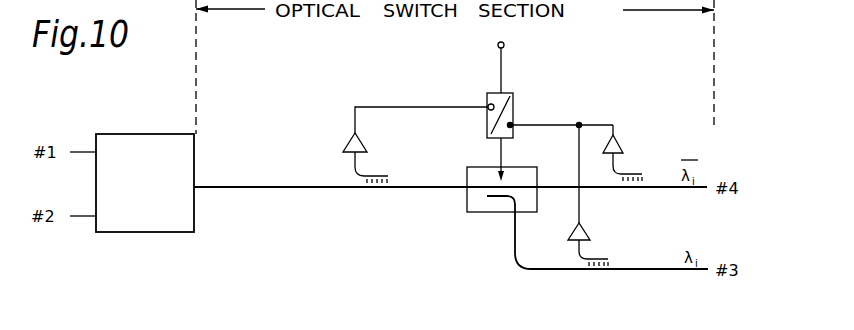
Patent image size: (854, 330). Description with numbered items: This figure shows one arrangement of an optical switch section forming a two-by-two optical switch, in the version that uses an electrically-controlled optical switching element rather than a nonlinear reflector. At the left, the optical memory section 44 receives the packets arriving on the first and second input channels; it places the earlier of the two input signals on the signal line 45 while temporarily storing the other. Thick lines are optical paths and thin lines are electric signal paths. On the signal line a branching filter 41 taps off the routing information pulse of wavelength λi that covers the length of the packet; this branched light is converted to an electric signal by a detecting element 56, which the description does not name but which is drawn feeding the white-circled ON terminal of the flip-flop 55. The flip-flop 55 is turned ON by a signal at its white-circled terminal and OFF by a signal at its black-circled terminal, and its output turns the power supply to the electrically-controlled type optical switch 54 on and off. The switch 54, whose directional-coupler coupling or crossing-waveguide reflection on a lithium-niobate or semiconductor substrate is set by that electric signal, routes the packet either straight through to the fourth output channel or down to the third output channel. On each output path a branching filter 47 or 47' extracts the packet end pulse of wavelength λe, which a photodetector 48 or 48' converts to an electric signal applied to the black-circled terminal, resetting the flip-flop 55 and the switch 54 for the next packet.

The optical memory section 44 is at (146, 134).
The signal line 45 is at (226, 191).
The branching filter 41 is at (372, 192).
The light source 56 is at (363, 139).
The flip-flop 55 is at (514, 101).
The electrically-controlled type optical switch 54 is at (466, 167).
The photodetector 48 is at (568, 195).
The photodetector 48' is at (630, 152).
The branching filter 47 is at (600, 289).
The branching filter 47' is at (635, 209).